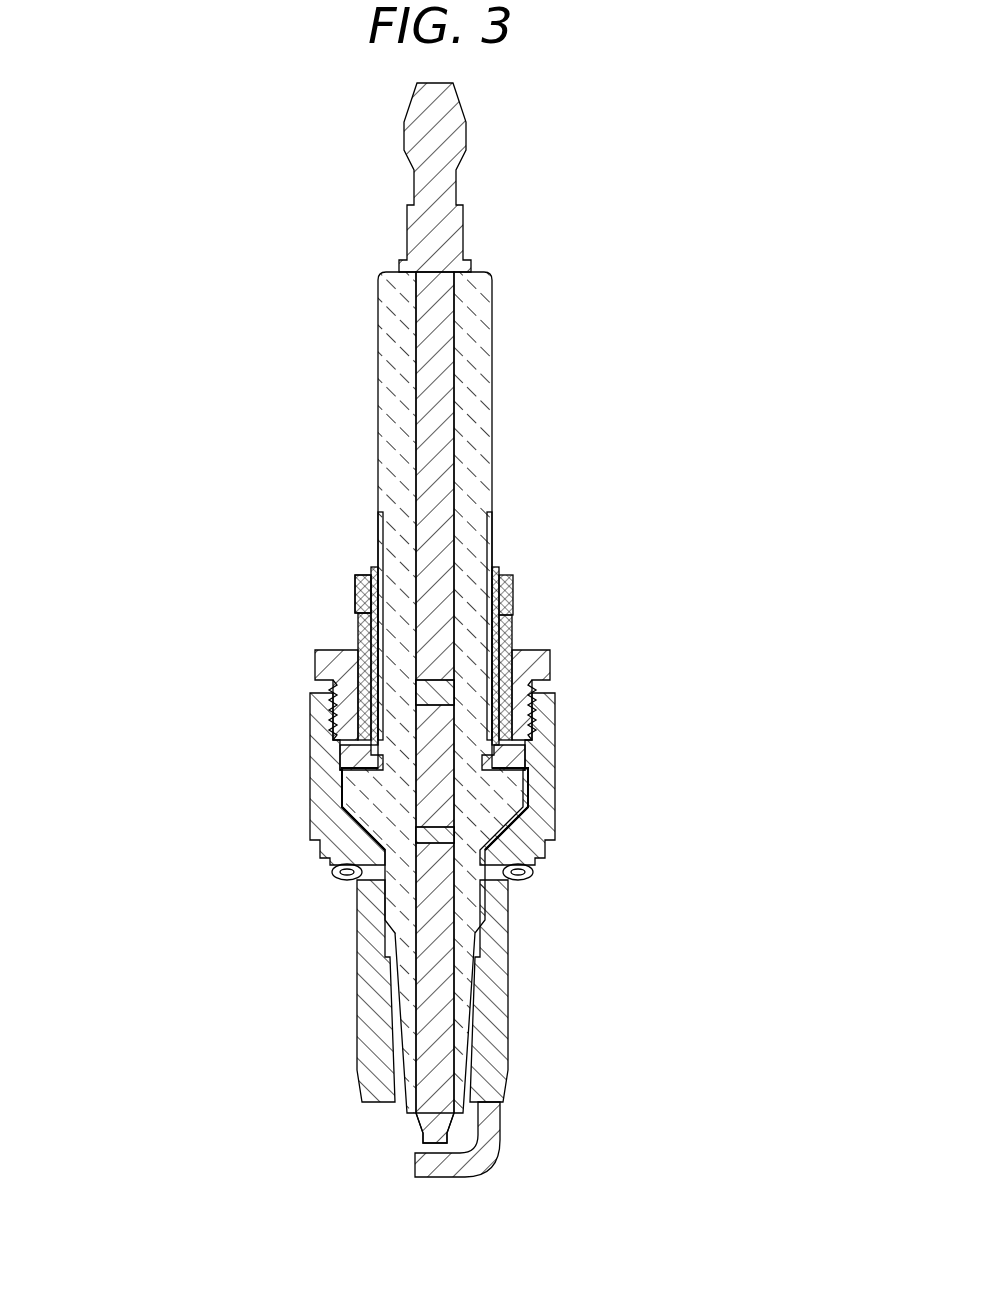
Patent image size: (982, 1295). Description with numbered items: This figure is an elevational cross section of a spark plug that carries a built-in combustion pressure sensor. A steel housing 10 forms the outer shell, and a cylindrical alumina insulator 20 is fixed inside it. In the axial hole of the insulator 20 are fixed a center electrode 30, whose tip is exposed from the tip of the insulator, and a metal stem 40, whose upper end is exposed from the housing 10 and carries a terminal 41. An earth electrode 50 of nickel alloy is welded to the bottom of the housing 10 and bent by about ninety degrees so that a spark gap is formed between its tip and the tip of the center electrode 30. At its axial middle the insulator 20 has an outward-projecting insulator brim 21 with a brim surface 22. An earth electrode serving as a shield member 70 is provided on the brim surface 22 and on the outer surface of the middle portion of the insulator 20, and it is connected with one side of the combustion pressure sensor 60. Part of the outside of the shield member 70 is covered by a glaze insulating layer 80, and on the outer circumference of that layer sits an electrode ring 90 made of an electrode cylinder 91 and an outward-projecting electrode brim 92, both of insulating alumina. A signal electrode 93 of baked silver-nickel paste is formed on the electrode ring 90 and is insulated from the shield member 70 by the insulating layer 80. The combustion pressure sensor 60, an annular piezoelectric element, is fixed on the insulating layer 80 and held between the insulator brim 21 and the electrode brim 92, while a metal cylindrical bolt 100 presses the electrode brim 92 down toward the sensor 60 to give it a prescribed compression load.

The housing 10 is at (495, 988).
The insulator 20 is at (478, 302).
The insulator brim 21 is at (537, 842).
The brim surface 22 is at (482, 822).
The center electrode 30 is at (426, 1130).
The stem 40 is at (437, 367).
The terminal 41 is at (459, 182).
The earth electrode 50 is at (492, 1127).
The combustion pressure sensor 60 is at (555, 765).
The earth electrode (shield member) 70 is at (490, 522).
The insulating layer 80 is at (500, 565).
The electrode ring 90 is at (516, 598).
The electrode cylinder 91 is at (358, 624).
The electrode brim 92 is at (342, 751).
The signal electrode 93 is at (355, 576).
The bolt 100 is at (550, 660).